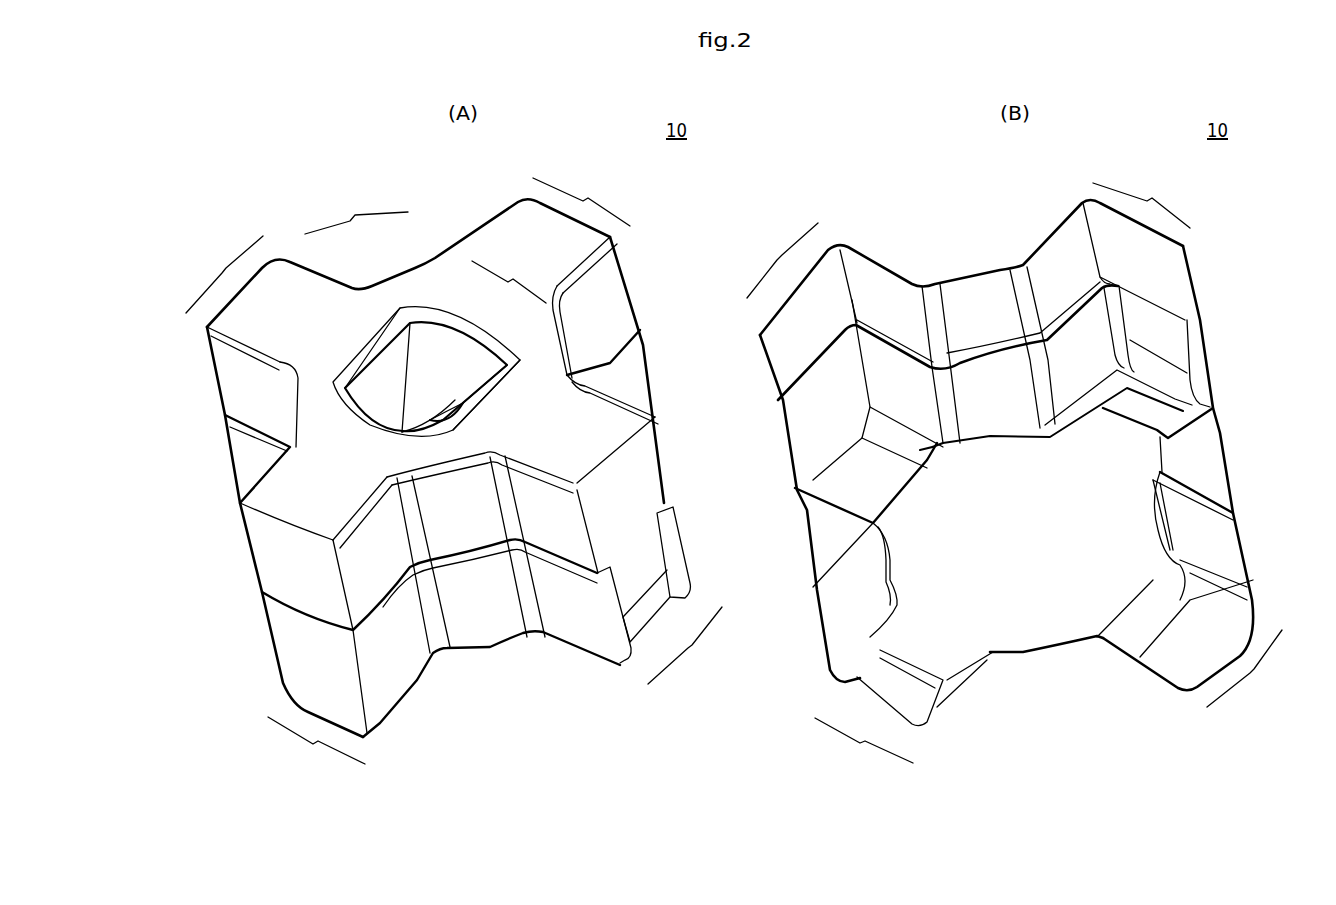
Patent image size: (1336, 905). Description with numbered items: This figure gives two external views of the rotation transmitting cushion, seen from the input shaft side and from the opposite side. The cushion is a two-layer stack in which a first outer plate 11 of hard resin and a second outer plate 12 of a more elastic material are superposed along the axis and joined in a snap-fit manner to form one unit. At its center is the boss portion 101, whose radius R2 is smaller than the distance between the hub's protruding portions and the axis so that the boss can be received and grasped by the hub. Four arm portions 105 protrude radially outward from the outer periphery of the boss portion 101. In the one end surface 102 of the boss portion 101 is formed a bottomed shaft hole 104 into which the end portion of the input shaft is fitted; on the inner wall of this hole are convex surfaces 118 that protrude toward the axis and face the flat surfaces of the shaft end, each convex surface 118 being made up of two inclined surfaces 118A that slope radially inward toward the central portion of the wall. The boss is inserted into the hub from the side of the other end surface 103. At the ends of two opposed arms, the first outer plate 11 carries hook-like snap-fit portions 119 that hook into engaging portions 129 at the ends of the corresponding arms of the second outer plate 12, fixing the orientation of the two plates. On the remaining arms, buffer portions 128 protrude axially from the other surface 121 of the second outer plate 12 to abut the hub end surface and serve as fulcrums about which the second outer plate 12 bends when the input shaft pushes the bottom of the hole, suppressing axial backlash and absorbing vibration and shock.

The first outer plate 11 is at (231, 538).
The second outer plate 12 is at (254, 661).
The boss portion 101 is at (398, 272).
The one end surface 102 is at (310, 414).
The other end surface 103 is at (1101, 626).
The bottomed shaft hole 104 is at (452, 335).
The arm portion 105 is at (735, 473).
The convex surface 118 is at (425, 245).
The inclined surface 118A is at (373, 380).
The snap-fit portion 119 is at (657, 615).
The other surface 121 is at (1069, 632).
The buffer portion 128 is at (819, 494).
The engaging portion 129 is at (693, 556).
The radius of the boss portion R2 is at (890, 575).